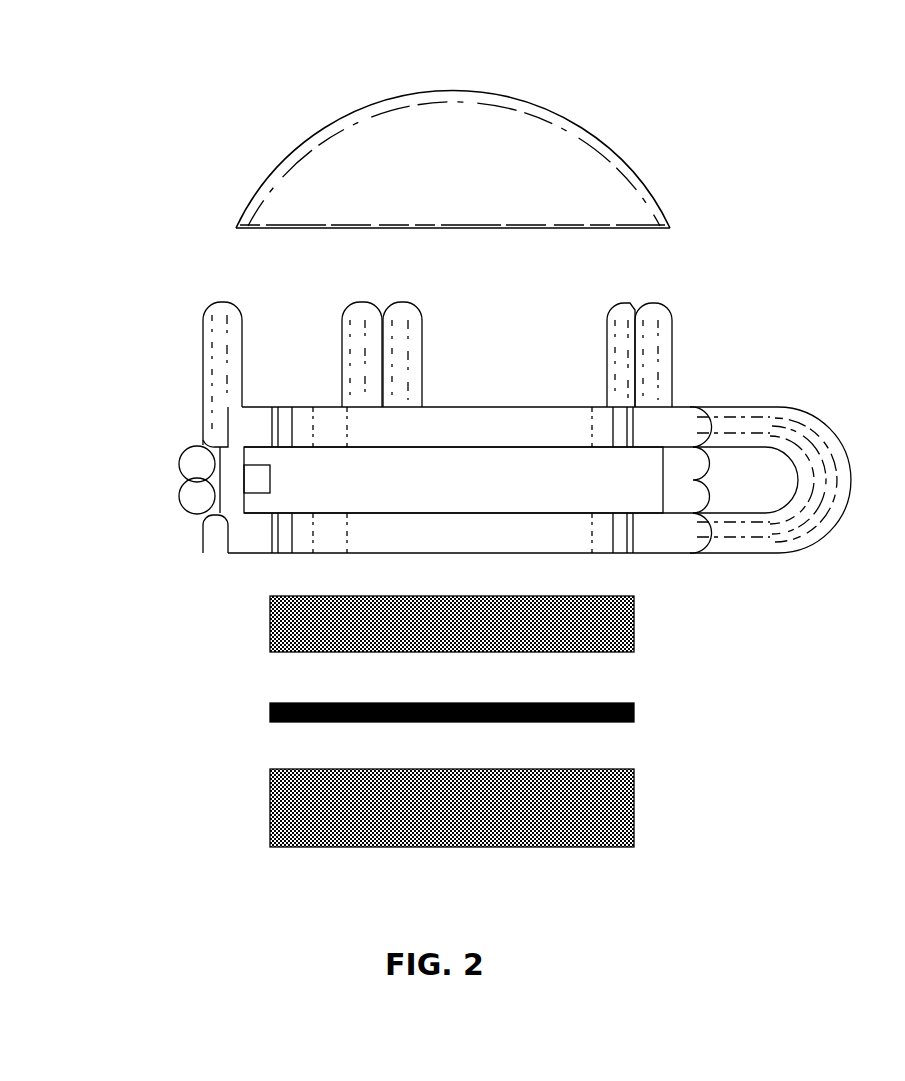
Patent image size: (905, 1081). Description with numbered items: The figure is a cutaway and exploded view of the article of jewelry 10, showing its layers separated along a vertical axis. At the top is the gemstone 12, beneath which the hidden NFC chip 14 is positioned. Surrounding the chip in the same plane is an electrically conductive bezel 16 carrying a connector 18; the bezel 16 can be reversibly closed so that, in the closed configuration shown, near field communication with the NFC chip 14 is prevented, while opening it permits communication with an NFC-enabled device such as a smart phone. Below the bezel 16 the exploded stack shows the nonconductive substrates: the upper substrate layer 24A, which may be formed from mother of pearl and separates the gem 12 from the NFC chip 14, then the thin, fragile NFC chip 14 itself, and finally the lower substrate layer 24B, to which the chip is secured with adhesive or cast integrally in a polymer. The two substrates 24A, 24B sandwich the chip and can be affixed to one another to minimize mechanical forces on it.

The article of jewelry 10 is at (685, 68).
The gemstone 12 is at (290, 165).
The NFC chip 14 is at (262, 707).
The bezel 16 is at (668, 422).
The connector 18 is at (187, 462).
The upper substrate layer 24A is at (262, 621).
The lower substrate layer 24B is at (260, 814).